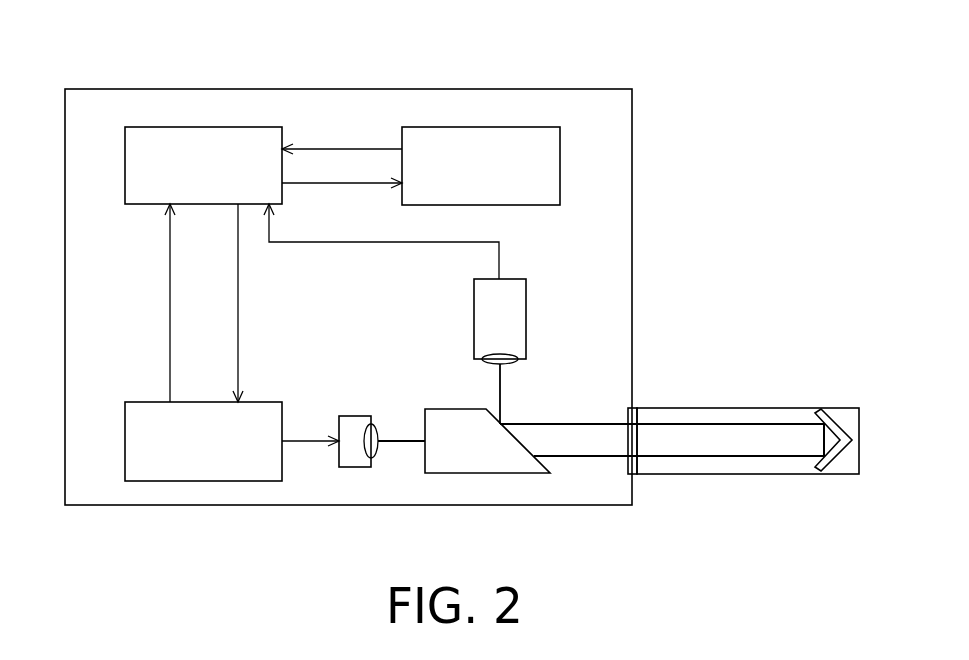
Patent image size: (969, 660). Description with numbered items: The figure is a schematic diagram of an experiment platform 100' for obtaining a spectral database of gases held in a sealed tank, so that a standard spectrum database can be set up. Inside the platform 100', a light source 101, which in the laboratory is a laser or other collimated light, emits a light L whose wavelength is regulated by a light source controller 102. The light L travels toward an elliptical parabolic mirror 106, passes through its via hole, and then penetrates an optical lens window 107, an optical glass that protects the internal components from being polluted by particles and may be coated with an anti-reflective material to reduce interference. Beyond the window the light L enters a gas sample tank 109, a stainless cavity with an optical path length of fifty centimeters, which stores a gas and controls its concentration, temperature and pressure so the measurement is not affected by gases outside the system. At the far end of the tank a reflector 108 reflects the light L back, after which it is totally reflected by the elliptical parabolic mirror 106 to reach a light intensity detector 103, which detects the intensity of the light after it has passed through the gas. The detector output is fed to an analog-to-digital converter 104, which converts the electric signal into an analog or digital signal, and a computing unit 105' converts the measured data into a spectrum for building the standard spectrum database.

The experiment platform 100' is at (330, 275).
The light source 101 is at (357, 416).
The light source controller 102 is at (223, 459).
The light intensity detector 103 is at (519, 331).
The analog-to-digital converter 104 is at (224, 179).
The computing unit 105' is at (481, 166).
The elliptical parabolic mirror 106 is at (486, 455).
The optical lens window 107 is at (637, 416).
The reflector 108 is at (836, 421).
The gas sample tank 109 is at (747, 408).
The light L is at (685, 457).